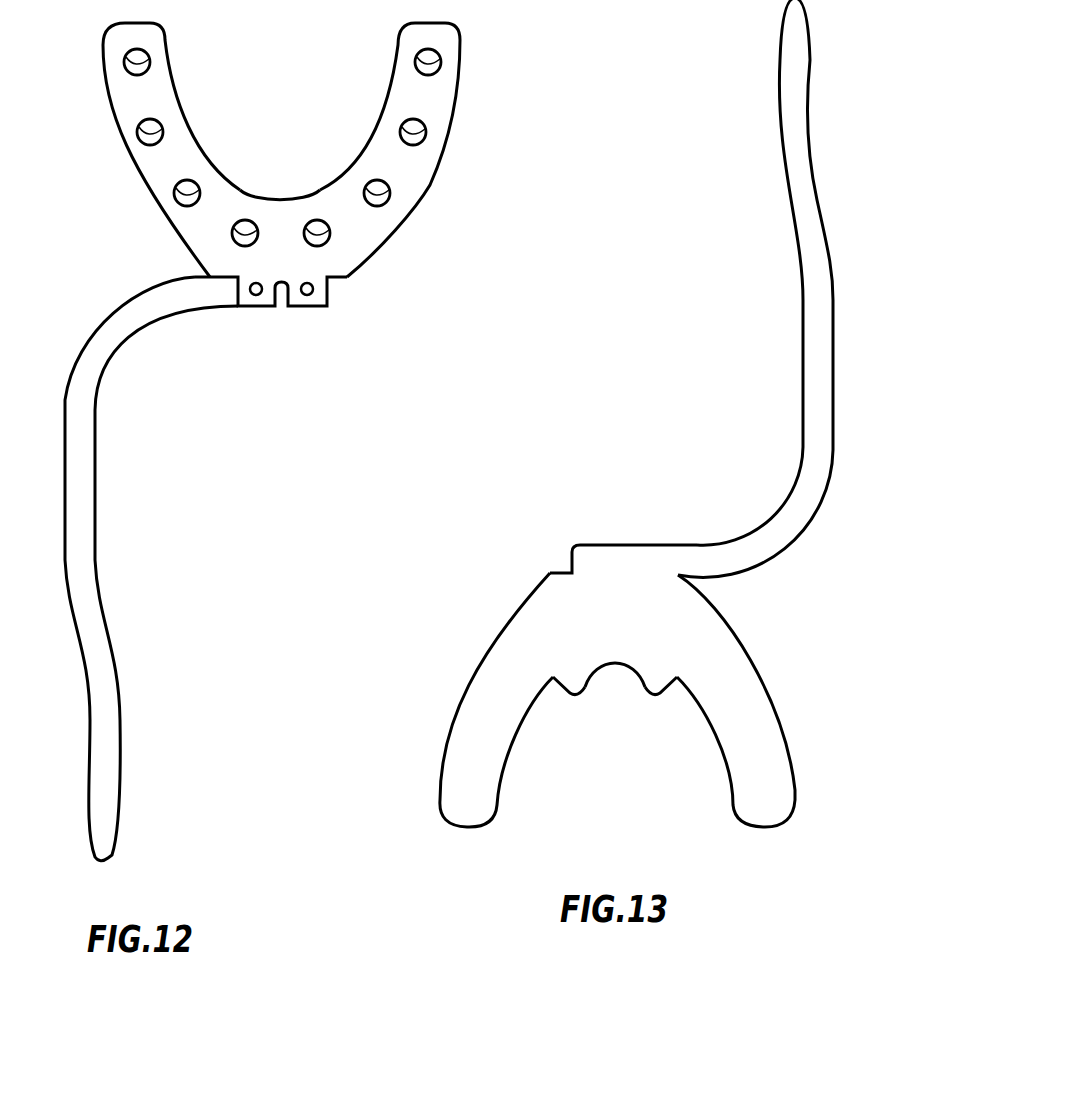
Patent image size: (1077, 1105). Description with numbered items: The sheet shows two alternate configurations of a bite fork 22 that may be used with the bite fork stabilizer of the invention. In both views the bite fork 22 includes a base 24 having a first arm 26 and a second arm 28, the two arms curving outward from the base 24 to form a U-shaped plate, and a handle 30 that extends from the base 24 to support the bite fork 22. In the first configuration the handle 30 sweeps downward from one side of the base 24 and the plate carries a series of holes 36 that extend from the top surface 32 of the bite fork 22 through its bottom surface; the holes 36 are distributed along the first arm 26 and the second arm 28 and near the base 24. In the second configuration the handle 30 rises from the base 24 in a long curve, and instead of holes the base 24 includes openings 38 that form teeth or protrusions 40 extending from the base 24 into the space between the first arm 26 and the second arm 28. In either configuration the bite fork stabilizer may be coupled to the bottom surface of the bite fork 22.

In FIG. 12, the bite fork 22 is at (281, 433).
In FIG. 13, the bite fork 22 is at (640, 413).
In FIG. 12, the base 24 is at (372, 255).
In FIG. 13, the base 24 is at (518, 603).
In FIG. 12, the first arm 26 is at (455, 103).
In FIG. 13, the first arm 26 is at (788, 732).
In FIG. 12, the second arm 28 is at (105, 83).
In FIG. 13, the second arm 28 is at (445, 732).
In FIG. 12, the handle 30 is at (98, 592).
In FIG. 13, the handle 30 is at (823, 212).
In FIG. 12, the top surface 32 is at (281, 150).
In FIG. 12, the holes 36 is at (150, 60).
In FIG. 13, the openings 38 is at (673, 687).
In FIG. 13, the teeth or protrusions 40 is at (573, 690).